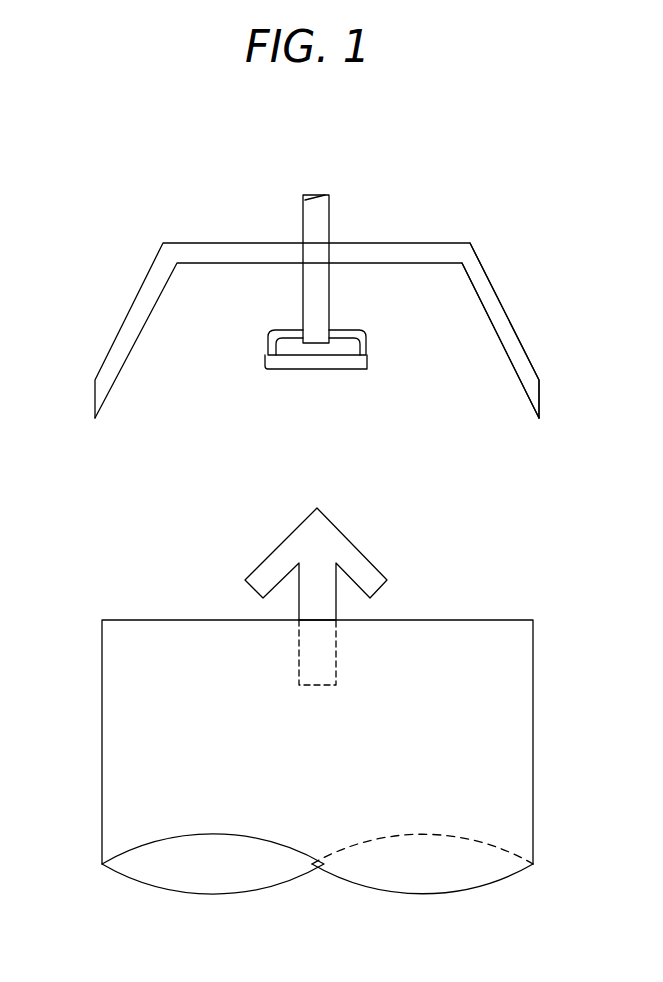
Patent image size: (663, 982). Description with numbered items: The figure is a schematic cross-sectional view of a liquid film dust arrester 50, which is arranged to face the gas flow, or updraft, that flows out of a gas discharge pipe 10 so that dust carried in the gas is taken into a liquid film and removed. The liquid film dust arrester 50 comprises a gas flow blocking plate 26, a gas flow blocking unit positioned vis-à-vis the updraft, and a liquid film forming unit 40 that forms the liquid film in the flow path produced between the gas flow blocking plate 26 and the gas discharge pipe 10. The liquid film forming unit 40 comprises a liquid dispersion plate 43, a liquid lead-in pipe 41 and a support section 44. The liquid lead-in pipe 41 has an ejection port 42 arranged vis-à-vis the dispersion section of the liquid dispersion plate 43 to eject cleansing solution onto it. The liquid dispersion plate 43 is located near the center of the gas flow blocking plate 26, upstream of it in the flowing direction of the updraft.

The gas discharge pipe 10 is at (450, 638).
The gas flow blocking plate 26 is at (521, 349).
The liquid film forming unit 40 is at (369, 305).
The liquid lead-in pipe 41 is at (328, 233).
The ejection port 42 is at (278, 327).
The liquid dispersion plate 43 is at (356, 365).
The support section 44 is at (268, 346).
The liquid film dust arrester 50 is at (91, 244).